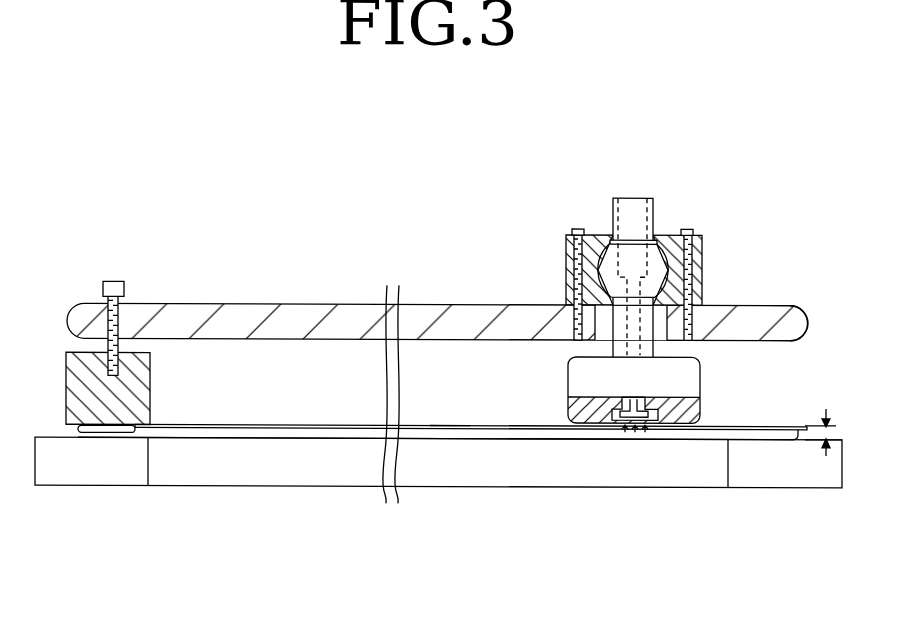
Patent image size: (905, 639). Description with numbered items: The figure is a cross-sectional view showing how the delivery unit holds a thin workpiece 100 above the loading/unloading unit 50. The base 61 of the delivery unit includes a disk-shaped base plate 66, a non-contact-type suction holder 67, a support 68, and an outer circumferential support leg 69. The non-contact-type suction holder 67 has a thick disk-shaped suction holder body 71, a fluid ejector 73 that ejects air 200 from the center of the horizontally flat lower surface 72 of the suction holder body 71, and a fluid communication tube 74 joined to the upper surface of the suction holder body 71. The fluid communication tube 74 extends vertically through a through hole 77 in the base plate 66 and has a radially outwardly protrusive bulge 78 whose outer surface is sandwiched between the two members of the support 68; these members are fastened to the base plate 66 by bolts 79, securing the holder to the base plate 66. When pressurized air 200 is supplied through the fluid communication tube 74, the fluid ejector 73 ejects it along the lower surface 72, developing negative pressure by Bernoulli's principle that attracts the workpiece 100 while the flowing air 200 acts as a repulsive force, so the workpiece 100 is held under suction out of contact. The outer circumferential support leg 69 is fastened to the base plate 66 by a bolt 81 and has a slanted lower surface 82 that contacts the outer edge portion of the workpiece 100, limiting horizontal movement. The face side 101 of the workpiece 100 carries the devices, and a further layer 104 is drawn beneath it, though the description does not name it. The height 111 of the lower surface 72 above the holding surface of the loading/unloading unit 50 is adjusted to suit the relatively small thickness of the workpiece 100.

The loading/unloading unit 50 is at (452, 474).
The base 61 is at (807, 295).
The base plate 66 is at (425, 315).
The non-contact-type suction holder 67 is at (562, 371).
The support 68 is at (708, 250).
The outer circumferential support leg 69 is at (72, 383).
The suction holder body 71 is at (580, 385).
The lower surface 72 is at (673, 430).
The fluid ejector 73 is at (613, 430).
The fluid communication tube 74 is at (653, 208).
The through hole 77 is at (597, 322).
The bulge 78 is at (655, 258).
The bolt 79 is at (577, 226).
The bolt 81 is at (113, 279).
The lower surface 82 is at (133, 425).
The workpiece 100 is at (447, 420).
The face side 101 is at (219, 425).
The plate 104 is at (271, 447).
The height 111 is at (830, 431).
The air 200 is at (608, 431).